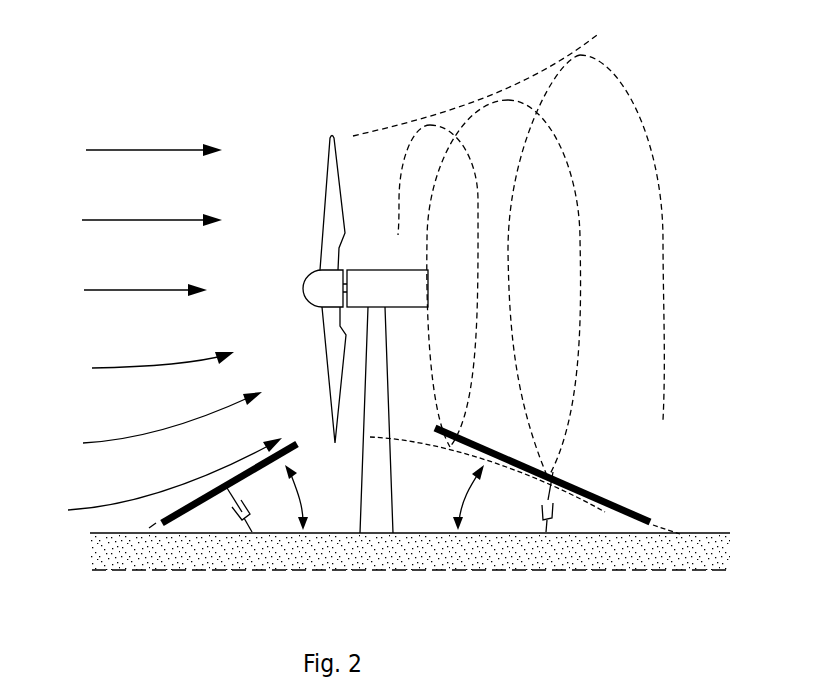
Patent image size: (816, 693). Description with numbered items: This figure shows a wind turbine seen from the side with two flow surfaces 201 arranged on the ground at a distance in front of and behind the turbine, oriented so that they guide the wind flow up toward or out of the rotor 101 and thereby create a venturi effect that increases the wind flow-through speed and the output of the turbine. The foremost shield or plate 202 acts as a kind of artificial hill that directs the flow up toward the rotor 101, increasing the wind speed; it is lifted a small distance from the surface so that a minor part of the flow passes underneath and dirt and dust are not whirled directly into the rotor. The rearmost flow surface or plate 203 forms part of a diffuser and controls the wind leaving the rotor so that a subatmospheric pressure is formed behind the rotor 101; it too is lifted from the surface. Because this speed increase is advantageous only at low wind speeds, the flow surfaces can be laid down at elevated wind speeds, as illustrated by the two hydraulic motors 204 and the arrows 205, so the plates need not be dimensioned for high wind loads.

The rotor 101 is at (332, 178).
The flow surfaces 201 is at (365, 478).
The foremost shield or plate 202 is at (198, 510).
The rearmost flow surface or plate 203 is at (576, 489).
The hydraulic motors 204 is at (241, 524).
The arrows 205 is at (457, 505).